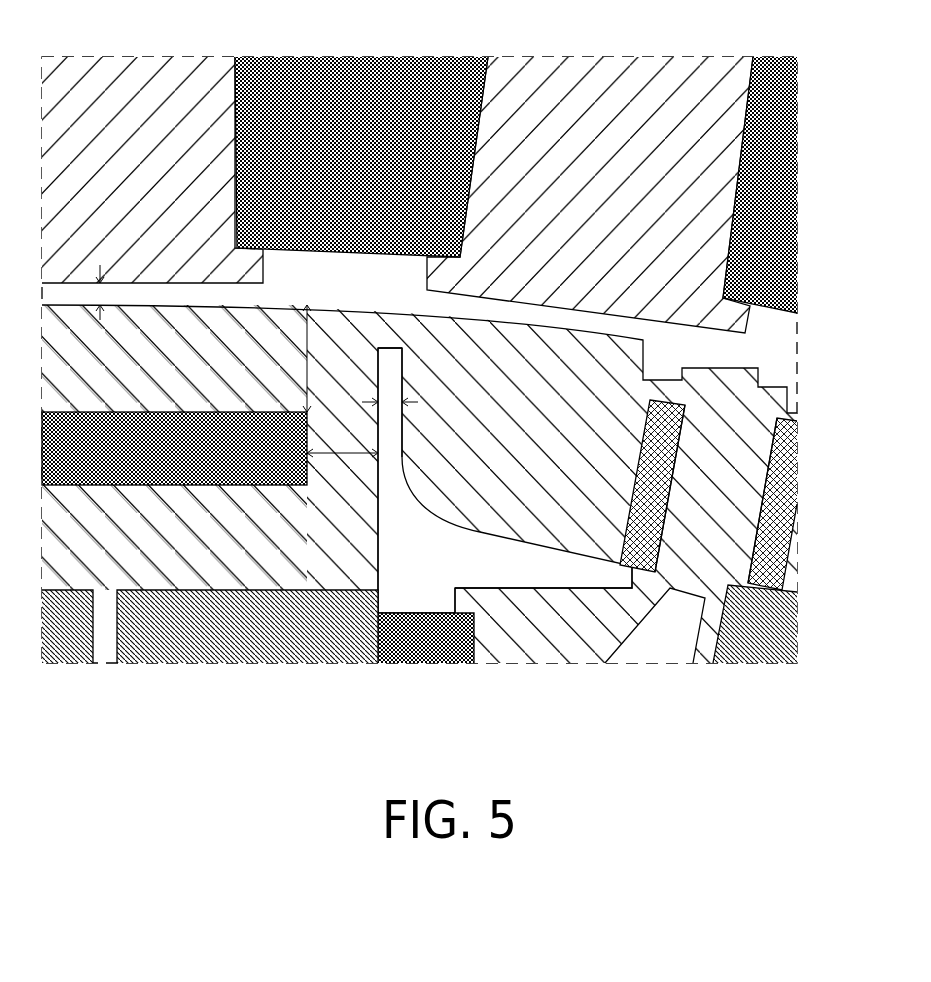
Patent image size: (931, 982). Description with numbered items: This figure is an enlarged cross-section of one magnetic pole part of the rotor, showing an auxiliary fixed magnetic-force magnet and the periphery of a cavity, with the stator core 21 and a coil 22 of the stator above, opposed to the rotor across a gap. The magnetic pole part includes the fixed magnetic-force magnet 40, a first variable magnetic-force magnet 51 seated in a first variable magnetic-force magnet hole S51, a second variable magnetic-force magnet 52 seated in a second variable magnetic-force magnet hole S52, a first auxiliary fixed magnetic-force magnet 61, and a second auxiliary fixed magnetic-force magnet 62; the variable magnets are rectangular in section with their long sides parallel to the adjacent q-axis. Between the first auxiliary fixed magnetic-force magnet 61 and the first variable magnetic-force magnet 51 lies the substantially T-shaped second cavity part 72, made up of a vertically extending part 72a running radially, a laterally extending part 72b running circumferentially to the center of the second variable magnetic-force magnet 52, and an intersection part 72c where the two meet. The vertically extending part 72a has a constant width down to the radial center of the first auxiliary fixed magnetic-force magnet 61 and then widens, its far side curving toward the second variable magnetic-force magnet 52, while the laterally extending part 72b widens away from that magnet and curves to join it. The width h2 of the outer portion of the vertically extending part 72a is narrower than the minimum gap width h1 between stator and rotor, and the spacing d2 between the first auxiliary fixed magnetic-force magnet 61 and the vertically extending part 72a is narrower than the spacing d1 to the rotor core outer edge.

The stator core 21 is at (138, 85).
The coil 22 is at (355, 87).
The fixed magnetic-force magnet 40 is at (280, 655).
The first variable magnetic-force magnet 51 is at (795, 479).
The first variable magnetic-force magnet hole S51 is at (790, 542).
The second variable magnetic-force magnet 52 is at (662, 398).
The second variable magnetic-force magnet hole S52 is at (688, 420).
The first auxiliary fixed magnetic-force magnet 61 is at (196, 411).
The second auxiliary fixed magnetic-force magnet 62 is at (422, 668).
The second cavity part 72 is at (454, 528).
The vertically extending part 72a is at (391, 365).
The laterally extending part 72b is at (533, 578).
The intersection part 72c is at (410, 560).
The minimum width of the gap h1 is at (104, 281).
The width of the vertically extending part h2 is at (391, 408).
The spacing d1 is at (291, 358).
The spacing d2 is at (342, 466).